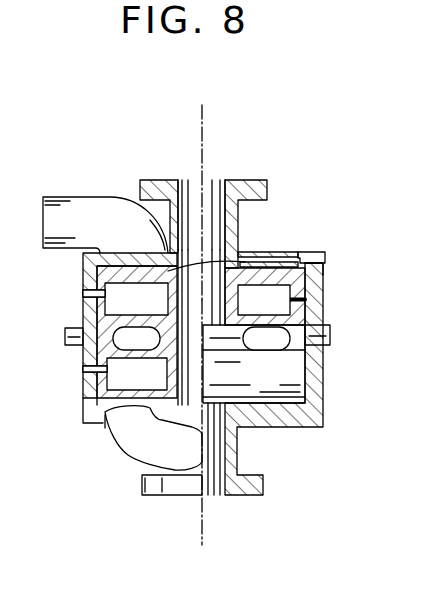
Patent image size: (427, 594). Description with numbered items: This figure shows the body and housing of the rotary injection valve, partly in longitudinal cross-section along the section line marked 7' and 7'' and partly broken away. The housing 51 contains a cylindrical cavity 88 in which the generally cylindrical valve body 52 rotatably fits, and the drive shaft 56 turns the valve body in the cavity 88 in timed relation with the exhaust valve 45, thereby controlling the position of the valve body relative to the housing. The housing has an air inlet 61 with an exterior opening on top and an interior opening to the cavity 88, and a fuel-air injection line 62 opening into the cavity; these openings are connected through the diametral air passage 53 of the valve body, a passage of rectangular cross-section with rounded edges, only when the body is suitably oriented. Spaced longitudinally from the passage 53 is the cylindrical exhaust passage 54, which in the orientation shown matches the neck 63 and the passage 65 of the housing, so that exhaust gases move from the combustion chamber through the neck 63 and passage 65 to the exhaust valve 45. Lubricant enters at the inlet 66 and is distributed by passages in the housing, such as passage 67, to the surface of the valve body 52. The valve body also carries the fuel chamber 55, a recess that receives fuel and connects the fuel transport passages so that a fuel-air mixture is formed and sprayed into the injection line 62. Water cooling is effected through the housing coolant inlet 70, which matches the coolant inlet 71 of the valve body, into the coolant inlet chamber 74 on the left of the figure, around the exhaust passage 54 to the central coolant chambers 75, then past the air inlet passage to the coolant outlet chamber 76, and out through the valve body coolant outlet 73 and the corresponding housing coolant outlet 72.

The section line 7' is at (246, 202).
The section line 7'' is at (248, 422).
The housing air inlet passage 61 is at (98, 205).
The outlet passage 65 is at (188, 220).
The exhaust passage 54 is at (201, 327).
The lubricant passage 67 is at (238, 253).
The lubricant inlet 66 is at (312, 253).
The exhaust valve 45 is at (328, 298).
The housing 51 is at (323, 268).
The coolant inlet chamber 74 is at (136, 299).
The coolant outlet chamber 76 is at (137, 374).
The diametral air passage 53 is at (136, 339).
The central coolant chambers 75 is at (264, 300).
The housing coolant inlet 70 is at (90, 293).
The valve body coolant inlet 71 is at (96, 297).
The drive shaft 56 is at (65, 336).
The valve body coolant outlet 73 is at (92, 370).
The housing coolant outlet 72 is at (92, 374).
The valve body 52 is at (280, 376).
The fuel chamber 55 is at (262, 340).
The cylindrical cavity 88 is at (287, 390).
The fuel-air injection line 62 is at (142, 448).
The neck 63 is at (222, 452).